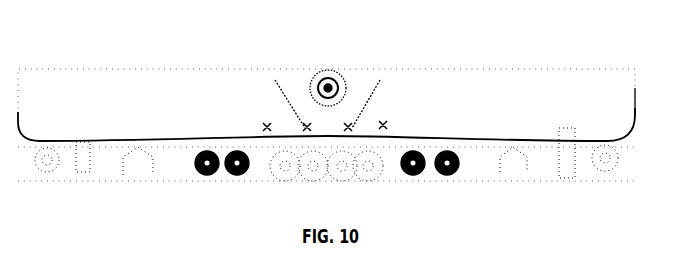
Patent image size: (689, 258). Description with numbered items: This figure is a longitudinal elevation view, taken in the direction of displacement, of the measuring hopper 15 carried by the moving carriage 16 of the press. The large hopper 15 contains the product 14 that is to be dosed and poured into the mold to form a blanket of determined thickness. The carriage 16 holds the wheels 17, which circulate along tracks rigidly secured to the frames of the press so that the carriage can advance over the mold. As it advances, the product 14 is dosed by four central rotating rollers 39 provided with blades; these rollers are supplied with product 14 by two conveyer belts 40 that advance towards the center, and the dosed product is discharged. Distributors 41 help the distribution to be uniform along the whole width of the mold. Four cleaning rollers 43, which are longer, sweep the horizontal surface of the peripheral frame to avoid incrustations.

The product 14 is at (108, 90).
The measuring hopper 15 is at (637, 94).
The displaceable carriage 16 is at (599, 176).
The wheels 17 is at (559, 178).
The central rotating rollers 39 is at (287, 170).
The conveyer belts 40 is at (166, 145).
The distributors 41 is at (376, 101).
The cleaning rollers 43 is at (214, 176).